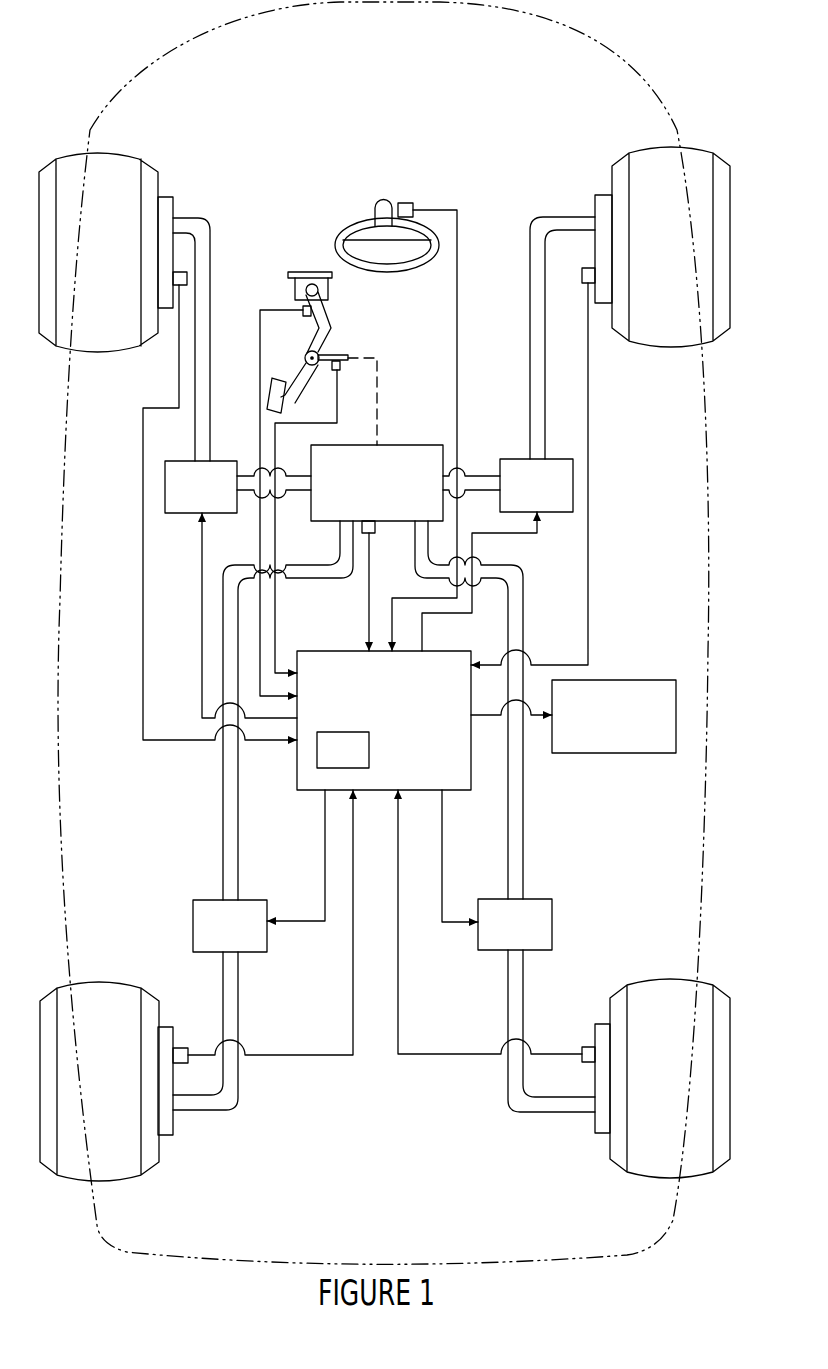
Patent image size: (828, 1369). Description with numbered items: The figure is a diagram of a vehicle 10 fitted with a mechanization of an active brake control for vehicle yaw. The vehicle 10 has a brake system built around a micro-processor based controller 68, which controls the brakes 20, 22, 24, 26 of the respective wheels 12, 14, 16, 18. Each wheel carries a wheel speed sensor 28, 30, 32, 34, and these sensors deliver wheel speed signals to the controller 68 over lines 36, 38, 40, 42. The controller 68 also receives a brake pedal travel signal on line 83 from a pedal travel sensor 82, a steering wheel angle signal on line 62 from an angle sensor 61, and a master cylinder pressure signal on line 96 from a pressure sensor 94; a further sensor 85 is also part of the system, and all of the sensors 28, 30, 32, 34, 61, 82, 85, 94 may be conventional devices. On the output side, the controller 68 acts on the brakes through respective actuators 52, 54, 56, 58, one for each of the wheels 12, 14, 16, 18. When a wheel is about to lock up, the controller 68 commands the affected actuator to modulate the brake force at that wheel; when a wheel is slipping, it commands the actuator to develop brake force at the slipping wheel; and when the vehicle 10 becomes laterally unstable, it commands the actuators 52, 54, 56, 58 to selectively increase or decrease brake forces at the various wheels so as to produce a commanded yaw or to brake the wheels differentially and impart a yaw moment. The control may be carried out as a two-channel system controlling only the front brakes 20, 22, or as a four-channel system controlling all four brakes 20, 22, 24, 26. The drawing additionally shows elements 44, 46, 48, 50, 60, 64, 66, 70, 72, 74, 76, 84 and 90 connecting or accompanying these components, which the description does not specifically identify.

The vehicle 10 is at (626, 30).
The wheel 12 is at (120, 162).
The wheel 14 is at (648, 160).
The wheel 16 is at (105, 1175).
The wheel 18 is at (662, 1173).
The brake 20 is at (165, 205).
The brake 22 is at (600, 198).
The brake 24 is at (165, 1128).
The brake 26 is at (603, 1128).
The wheel speed sensor 28 is at (182, 272).
The wheel speed sensor 30 is at (584, 268).
The wheel speed sensor 32 is at (181, 1046).
The wheel speed sensor 34 is at (585, 1047).
The line 36 is at (143, 428).
The line 38 is at (588, 428).
The line 40 is at (320, 1056).
The line 42 is at (438, 1058).
The left front brake line 44 is at (192, 225).
The right front brake line 46 is at (543, 222).
The left rear brake line 48 is at (230, 987).
The right rear brake line 50 is at (515, 1008).
The actuator 52 is at (165, 485).
The actuator 54 is at (573, 483).
The actuator 56 is at (200, 915).
The actuator 58 is at (545, 912).
The steering wheel 60 is at (333, 247).
The angle sensor 61 is at (397, 201).
The line 62 is at (430, 209).
The brake pedal 64 is at (273, 413).
The master cylinder 66 is at (385, 455).
The controller 68 is at (462, 786).
The left front actuator control line 70 is at (202, 577).
The right front actuator control line 72 is at (517, 537).
The left rear actuator control line 74 is at (287, 922).
The right rear actuator control line 76 is at (462, 923).
The pedal travel sensor 82 is at (340, 371).
The line 83 is at (258, 318).
The pedal sensor signal line 84 is at (276, 651).
The sensor 85 is at (309, 317).
The driver information display 90 is at (615, 683).
The pressure sensor 94 is at (372, 533).
The line 96 is at (368, 595).